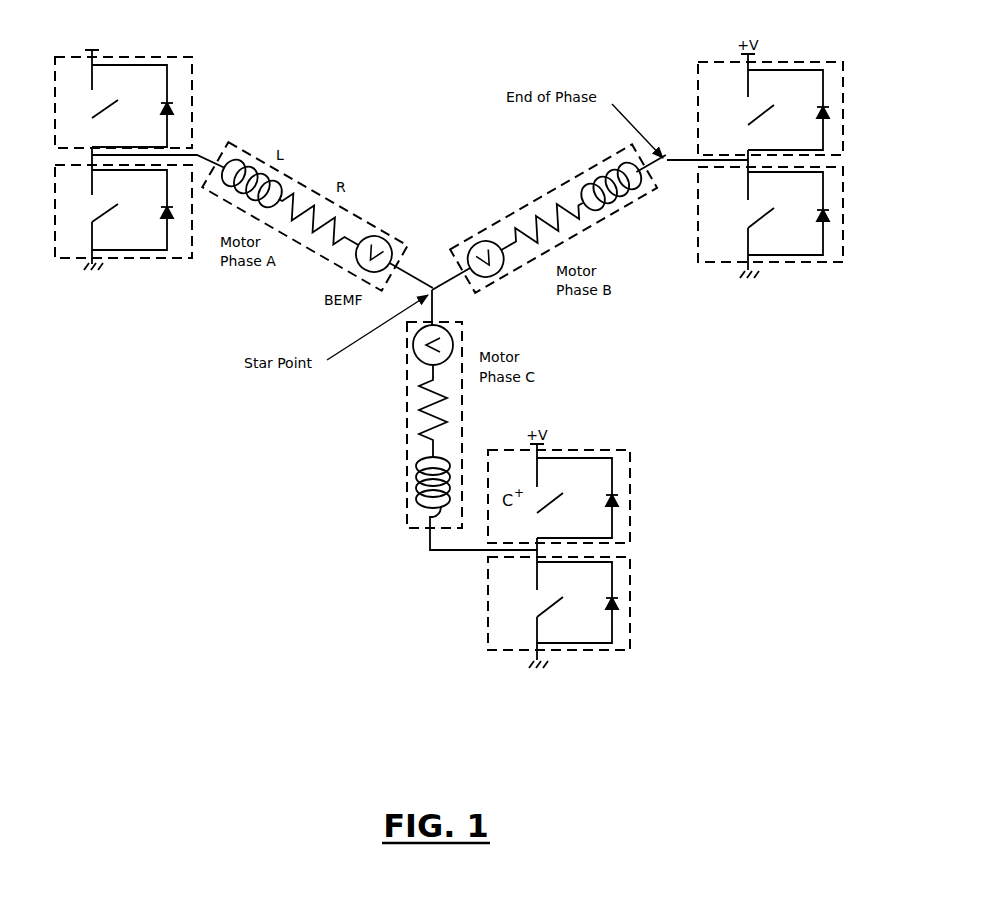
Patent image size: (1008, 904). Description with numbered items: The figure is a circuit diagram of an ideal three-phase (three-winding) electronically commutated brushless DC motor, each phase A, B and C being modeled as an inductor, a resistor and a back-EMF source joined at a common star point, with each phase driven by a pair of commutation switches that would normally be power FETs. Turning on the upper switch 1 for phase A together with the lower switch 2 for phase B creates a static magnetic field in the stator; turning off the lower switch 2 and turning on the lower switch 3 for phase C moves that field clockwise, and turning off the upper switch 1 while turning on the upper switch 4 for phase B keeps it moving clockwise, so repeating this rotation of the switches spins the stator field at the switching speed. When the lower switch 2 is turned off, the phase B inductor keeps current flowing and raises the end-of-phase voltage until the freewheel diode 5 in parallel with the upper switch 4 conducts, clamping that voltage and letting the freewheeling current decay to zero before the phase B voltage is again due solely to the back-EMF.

The upper switch 1 is at (76, 74).
The lower switch 2 is at (717, 241).
The lower switch 3 is at (514, 629).
The upper switch 4 is at (714, 81).
The freewheel diode 5 is at (832, 117).